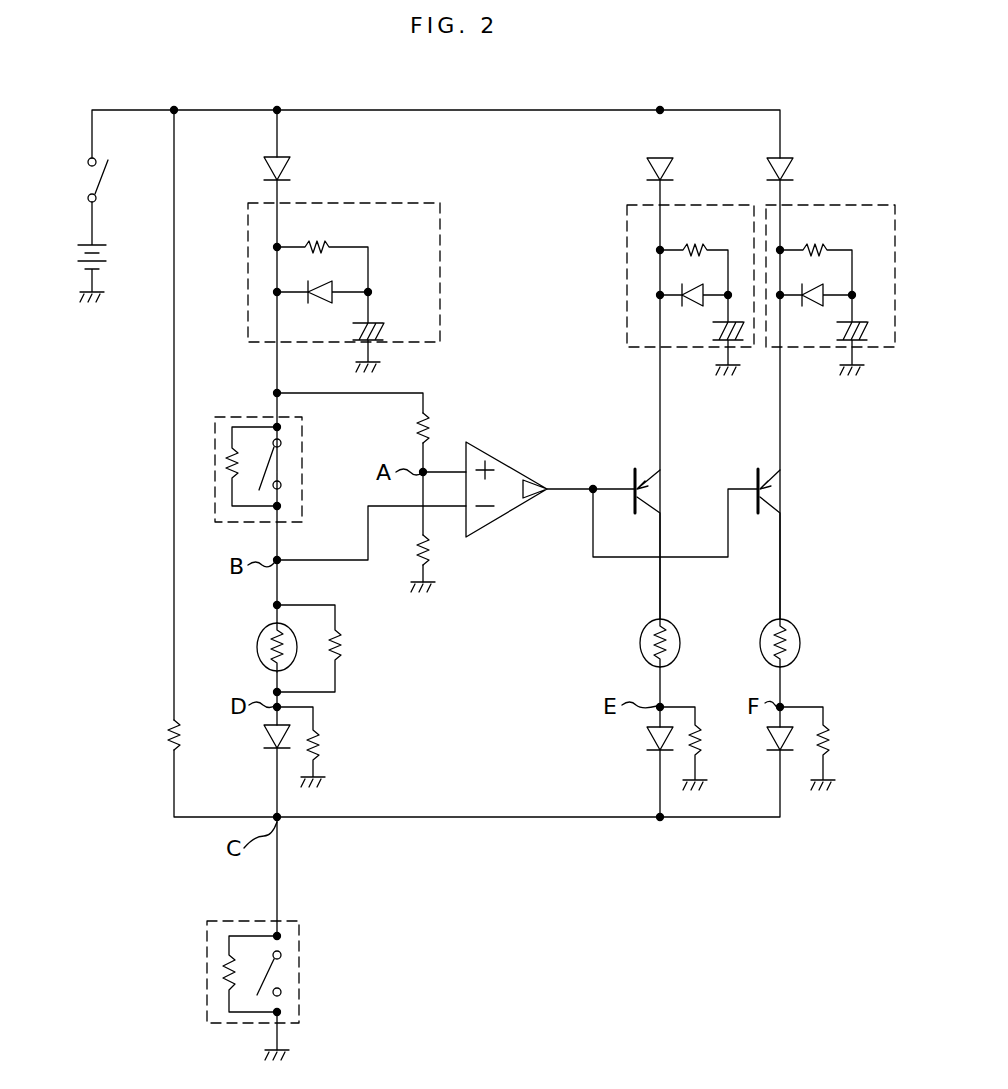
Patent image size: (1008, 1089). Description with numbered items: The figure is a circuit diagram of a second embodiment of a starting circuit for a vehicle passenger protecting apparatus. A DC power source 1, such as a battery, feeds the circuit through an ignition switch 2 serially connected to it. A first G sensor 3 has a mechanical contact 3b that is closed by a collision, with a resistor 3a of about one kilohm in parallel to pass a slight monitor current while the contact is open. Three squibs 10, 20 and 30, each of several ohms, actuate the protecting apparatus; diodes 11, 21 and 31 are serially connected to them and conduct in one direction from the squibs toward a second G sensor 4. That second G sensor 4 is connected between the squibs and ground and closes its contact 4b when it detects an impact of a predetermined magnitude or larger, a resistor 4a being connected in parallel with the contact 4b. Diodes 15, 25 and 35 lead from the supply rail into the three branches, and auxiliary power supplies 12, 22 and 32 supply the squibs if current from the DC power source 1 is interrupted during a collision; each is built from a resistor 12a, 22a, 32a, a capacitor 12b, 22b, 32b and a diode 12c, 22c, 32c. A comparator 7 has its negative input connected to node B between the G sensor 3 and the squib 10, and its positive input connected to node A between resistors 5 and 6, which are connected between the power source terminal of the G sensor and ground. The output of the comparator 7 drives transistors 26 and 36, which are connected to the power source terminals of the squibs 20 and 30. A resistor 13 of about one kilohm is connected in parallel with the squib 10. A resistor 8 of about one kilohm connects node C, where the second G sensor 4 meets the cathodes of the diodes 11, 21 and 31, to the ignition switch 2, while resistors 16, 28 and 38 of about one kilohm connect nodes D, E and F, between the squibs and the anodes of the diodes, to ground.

The DC power source 1 is at (108, 257).
The ignition switch 2 is at (106, 183).
The G sensor 3 is at (239, 442).
The resistor 3a is at (228, 465).
The mechanical contact 3b is at (283, 465).
The second G sensor 4 is at (248, 972).
The resistor 4a is at (220, 987).
The contact 4b is at (282, 972).
The resistor 5 is at (432, 428).
The resistor 6 is at (419, 550).
The comparator 7 is at (500, 466).
The resistor 8 is at (172, 742).
The squib 10 is at (264, 628).
The diode 11 is at (266, 736).
The auxiliary power supply 12 is at (344, 257).
The resistor 12a is at (322, 245).
The capacitor 12b is at (386, 332).
The diode 12c is at (320, 306).
The resistor 13 is at (337, 642).
The diode 15 is at (293, 165).
The resistor 16 is at (322, 744).
The squib 20 is at (638, 628).
The diode 21 is at (642, 738).
The auxiliary power supply 22 is at (661, 290).
The resistor 22a is at (685, 248).
The capacitor 22b is at (715, 341).
The diode 22c is at (692, 301).
The diode 25 is at (647, 162).
The transistor 26 is at (648, 468).
The resistor 28 is at (695, 726).
The squib 30 is at (761, 628).
The diode 31 is at (774, 740).
The auxiliary power supply 32 is at (830, 260).
The resistor 32a is at (808, 248).
The capacitor 32b is at (839, 341).
The diode 32c is at (812, 301).
The diode 35 is at (778, 158).
The transistor 36 is at (768, 460).
The resistor 38 is at (828, 738).